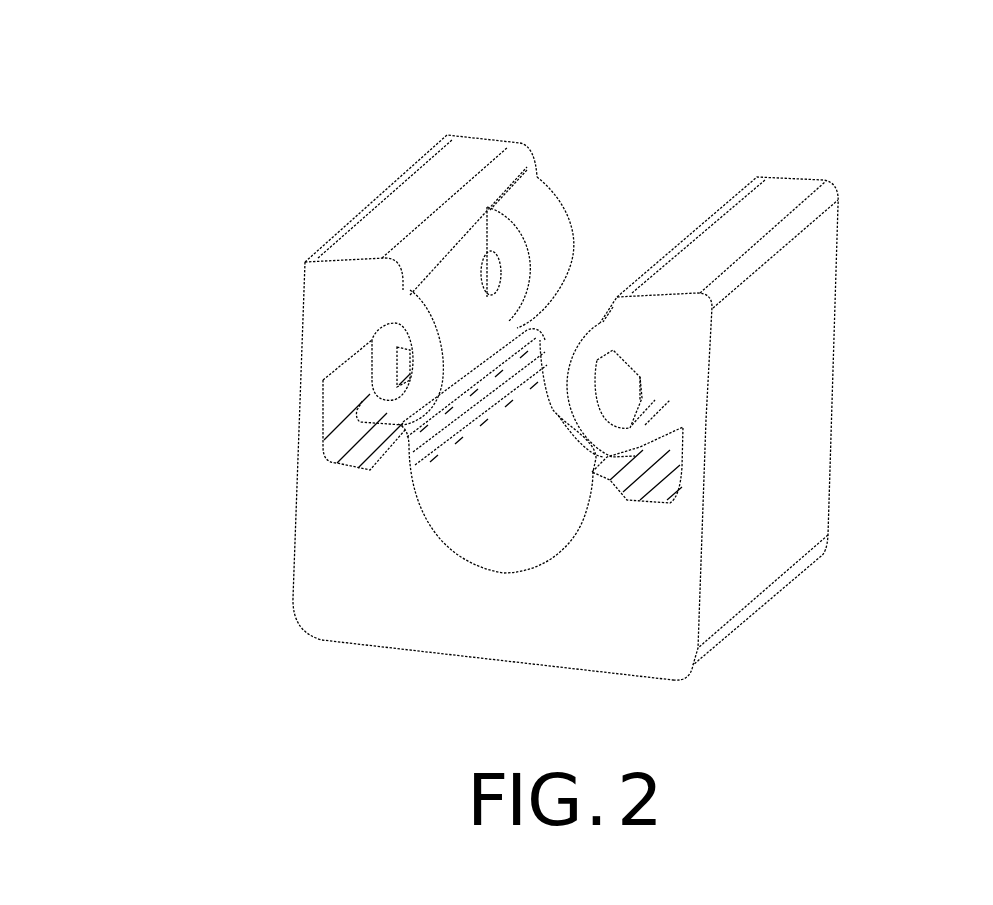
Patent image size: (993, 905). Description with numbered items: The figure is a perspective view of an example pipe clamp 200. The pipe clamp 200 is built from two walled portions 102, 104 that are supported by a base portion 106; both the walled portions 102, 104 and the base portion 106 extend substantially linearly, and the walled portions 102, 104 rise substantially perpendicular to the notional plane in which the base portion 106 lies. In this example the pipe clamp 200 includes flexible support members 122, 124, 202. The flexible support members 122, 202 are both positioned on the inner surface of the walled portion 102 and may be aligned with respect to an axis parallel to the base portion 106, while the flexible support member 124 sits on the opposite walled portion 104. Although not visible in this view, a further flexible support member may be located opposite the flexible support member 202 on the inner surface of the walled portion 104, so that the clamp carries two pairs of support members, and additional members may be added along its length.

The pipe clamp 200 is at (219, 67).
The walled portion 102 is at (302, 322).
The walled portion 104 is at (830, 425).
The base portion 106 is at (520, 662).
The flexible support member 122 is at (483, 310).
The flexible support member 124 is at (597, 325).
The flexible support member 202 is at (573, 250).